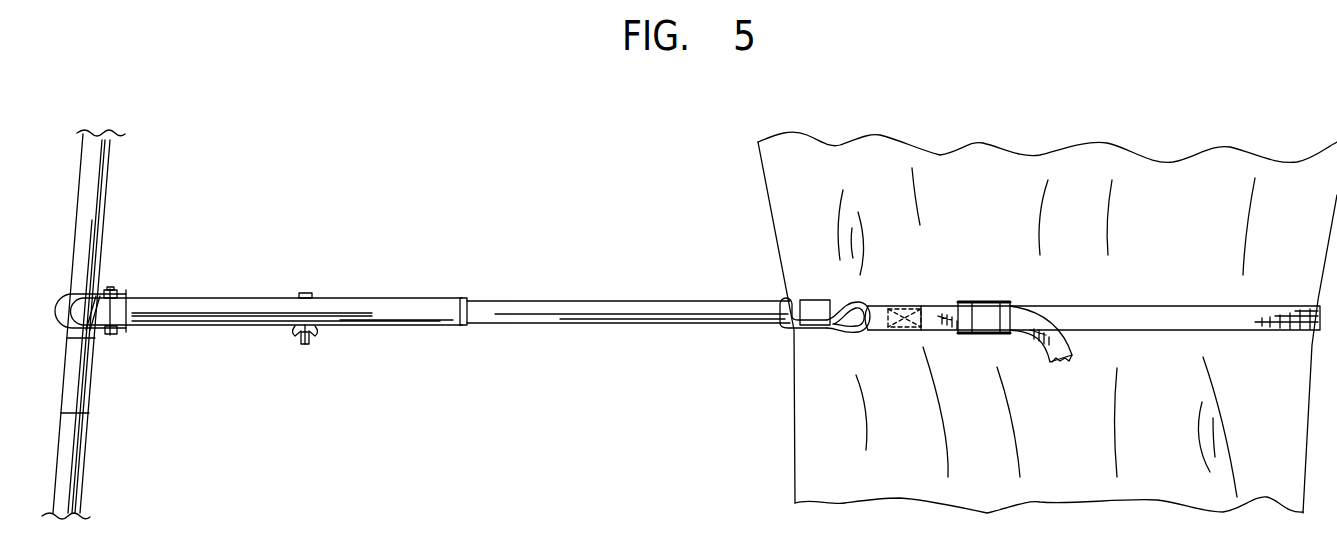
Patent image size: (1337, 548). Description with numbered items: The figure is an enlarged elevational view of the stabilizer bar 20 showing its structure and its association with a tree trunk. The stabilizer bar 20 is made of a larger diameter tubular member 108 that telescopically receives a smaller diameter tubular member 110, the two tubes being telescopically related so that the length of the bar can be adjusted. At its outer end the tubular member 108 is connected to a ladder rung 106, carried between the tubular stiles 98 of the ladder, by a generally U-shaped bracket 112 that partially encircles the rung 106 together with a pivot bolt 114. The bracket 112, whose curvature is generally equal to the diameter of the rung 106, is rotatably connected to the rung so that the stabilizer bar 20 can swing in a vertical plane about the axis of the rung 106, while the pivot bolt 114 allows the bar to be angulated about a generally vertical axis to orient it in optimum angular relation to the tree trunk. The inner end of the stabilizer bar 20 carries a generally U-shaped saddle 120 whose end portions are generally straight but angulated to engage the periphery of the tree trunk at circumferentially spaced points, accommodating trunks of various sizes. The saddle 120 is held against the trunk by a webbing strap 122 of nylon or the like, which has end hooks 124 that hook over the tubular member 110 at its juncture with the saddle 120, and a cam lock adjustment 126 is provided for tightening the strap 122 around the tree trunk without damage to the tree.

The stabilizer bar 20 is at (538, 292).
The tubular stile 98 is at (93, 173).
The ladder rung 106 is at (110, 318).
The larger diameter tubular member 108 is at (213, 312).
The smaller diameter tubular member 110 is at (570, 312).
The U-shaped bracket 112 is at (95, 332).
The pivot bolt 114 is at (110, 290).
The U-shaped saddle 120 is at (812, 303).
The webbing strap 122 is at (1165, 318).
The end hook 124 is at (798, 334).
The cam lock adjustment 126 is at (990, 300).